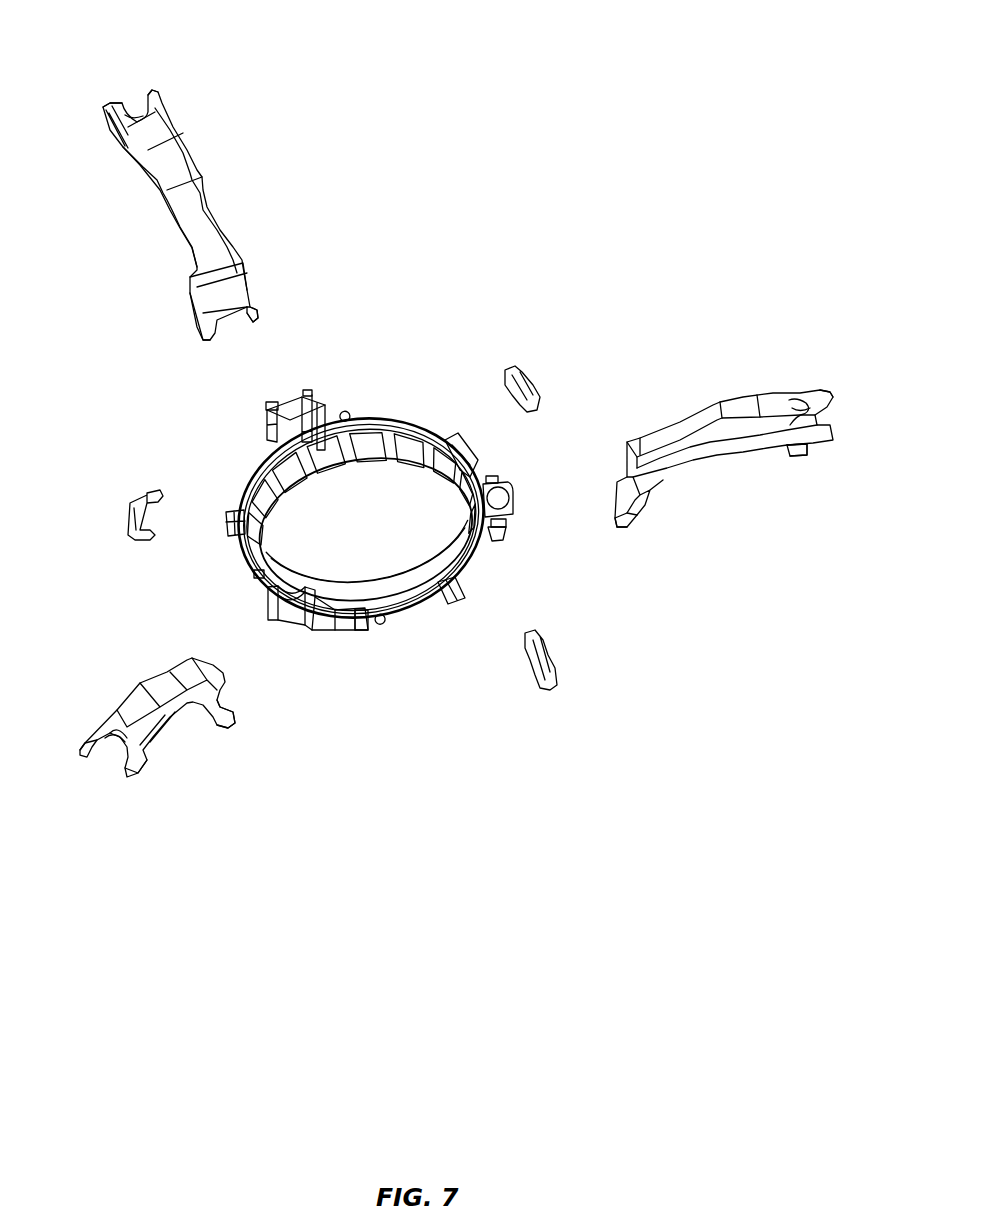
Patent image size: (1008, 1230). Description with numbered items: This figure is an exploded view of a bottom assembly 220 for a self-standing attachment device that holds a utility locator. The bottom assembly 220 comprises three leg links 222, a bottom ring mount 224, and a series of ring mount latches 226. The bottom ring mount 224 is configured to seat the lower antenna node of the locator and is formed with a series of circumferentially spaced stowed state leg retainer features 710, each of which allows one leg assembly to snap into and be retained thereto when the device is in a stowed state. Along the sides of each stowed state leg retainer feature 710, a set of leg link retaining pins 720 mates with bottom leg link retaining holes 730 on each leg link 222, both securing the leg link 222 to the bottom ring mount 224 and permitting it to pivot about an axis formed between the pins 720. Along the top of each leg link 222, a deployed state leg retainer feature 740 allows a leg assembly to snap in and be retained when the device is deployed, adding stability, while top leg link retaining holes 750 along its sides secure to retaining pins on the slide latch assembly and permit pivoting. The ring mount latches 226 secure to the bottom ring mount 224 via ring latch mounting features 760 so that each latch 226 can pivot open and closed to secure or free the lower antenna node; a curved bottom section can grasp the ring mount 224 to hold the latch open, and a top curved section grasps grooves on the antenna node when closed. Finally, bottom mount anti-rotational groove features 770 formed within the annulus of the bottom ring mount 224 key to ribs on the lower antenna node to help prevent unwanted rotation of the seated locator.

The bottom assembly 220 is at (523, 57).
The leg link 222 is at (220, 217).
The bottom ring mount 224 is at (397, 412).
The ring mount latch 226 is at (130, 500).
The stowed state leg retainer feature 710 is at (287, 400).
The leg link retaining pin 720 is at (266, 410).
The bottom leg link retaining hole 730 is at (255, 312).
The deployed state leg retainer feature 740 is at (133, 118).
The top leg link retaining hole 750 is at (162, 97).
The ring latch mounting feature 760 is at (455, 440).
The bottom mount anti-rotational groove feature 770 is at (325, 468).